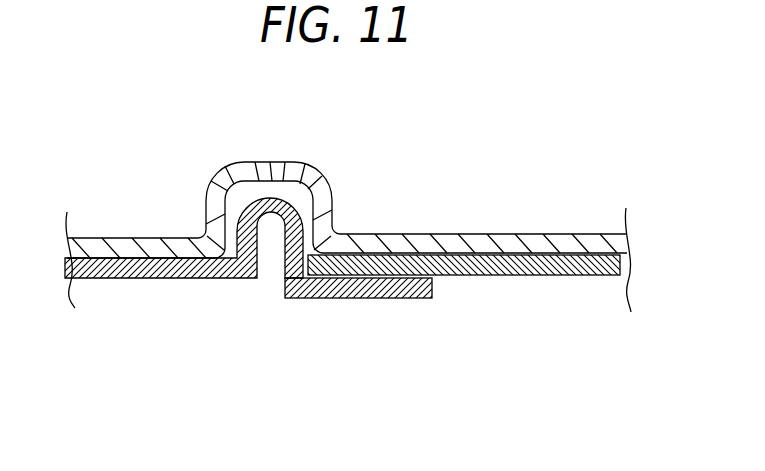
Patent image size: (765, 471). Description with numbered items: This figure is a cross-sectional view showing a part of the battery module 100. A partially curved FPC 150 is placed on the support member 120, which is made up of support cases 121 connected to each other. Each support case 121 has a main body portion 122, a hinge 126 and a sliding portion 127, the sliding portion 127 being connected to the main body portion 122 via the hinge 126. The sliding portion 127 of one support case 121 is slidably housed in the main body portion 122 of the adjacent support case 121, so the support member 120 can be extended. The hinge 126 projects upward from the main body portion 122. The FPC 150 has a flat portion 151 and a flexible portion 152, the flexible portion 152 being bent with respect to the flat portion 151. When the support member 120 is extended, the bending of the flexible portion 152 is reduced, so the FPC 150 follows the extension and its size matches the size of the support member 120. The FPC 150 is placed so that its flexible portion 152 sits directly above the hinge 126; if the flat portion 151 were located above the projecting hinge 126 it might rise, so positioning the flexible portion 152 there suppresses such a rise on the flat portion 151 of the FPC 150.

The battery module 100 is at (118, 193).
The support member 120 is at (323, 312).
The support case 121 is at (123, 283).
The main body portion 122 is at (165, 282).
The hinge 126 is at (272, 212).
The sliding portion 127 is at (382, 293).
The FPC 150 is at (388, 230).
The flat portion 151 is at (510, 245).
The flexible portion 152 is at (281, 172).